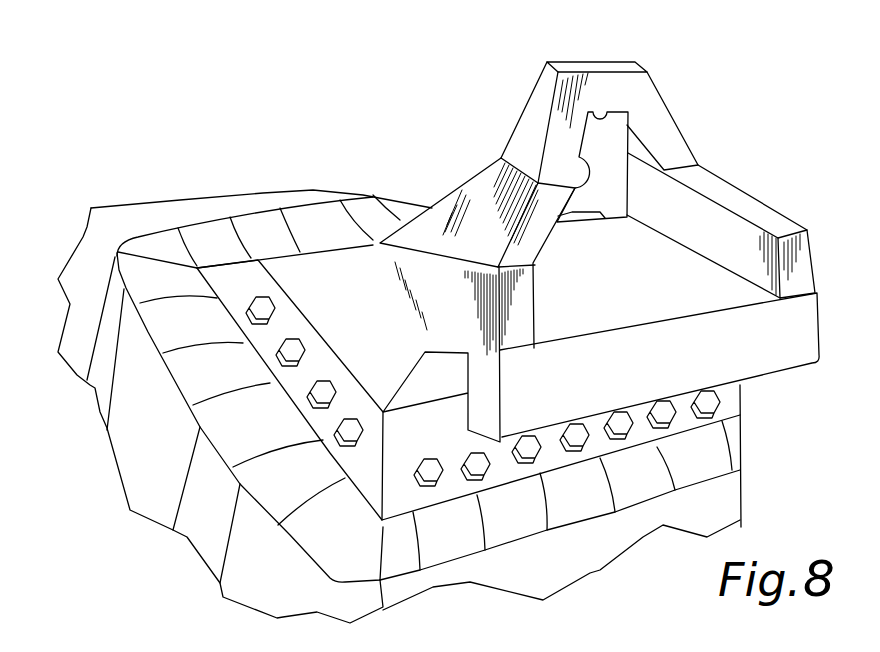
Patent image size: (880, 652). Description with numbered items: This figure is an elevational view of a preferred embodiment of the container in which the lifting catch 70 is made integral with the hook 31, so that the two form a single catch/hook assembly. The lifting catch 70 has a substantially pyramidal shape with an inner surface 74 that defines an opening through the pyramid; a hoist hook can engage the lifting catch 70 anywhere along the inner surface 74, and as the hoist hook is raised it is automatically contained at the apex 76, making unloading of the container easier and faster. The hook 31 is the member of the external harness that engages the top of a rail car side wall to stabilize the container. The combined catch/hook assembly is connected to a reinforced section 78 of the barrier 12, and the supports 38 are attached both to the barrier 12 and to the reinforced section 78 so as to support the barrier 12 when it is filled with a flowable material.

The barrier 12 is at (257, 580).
The hook 31 is at (795, 337).
The supports 38 is at (110, 368).
The lifting catch 70 is at (673, 150).
The inner surface 74 is at (584, 172).
The apex 76 is at (612, 110).
The reinforced section 78 is at (687, 463).